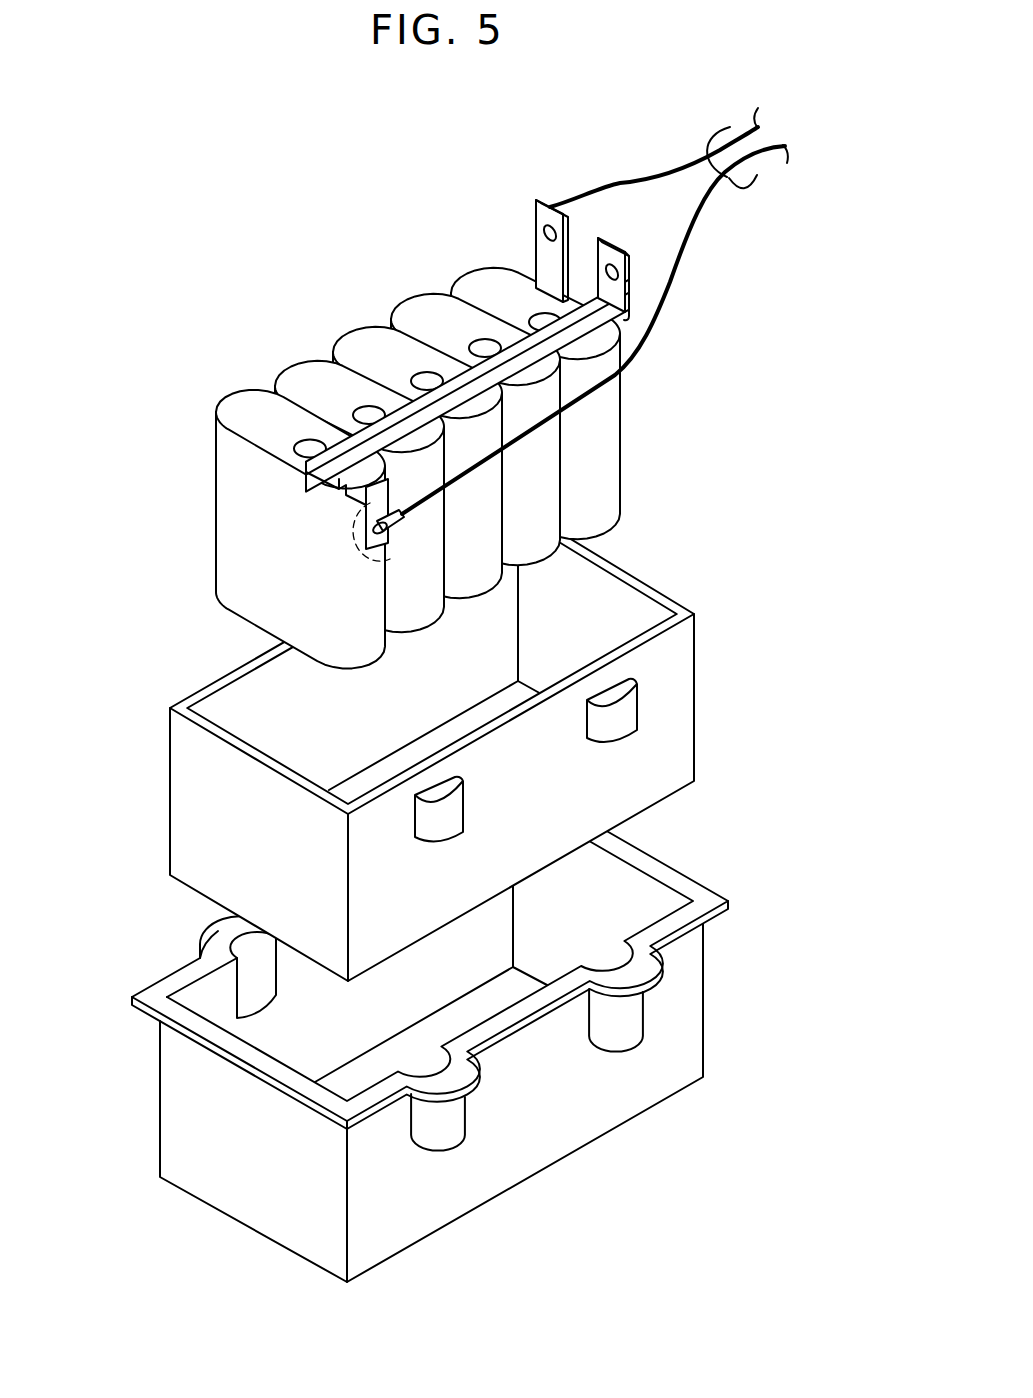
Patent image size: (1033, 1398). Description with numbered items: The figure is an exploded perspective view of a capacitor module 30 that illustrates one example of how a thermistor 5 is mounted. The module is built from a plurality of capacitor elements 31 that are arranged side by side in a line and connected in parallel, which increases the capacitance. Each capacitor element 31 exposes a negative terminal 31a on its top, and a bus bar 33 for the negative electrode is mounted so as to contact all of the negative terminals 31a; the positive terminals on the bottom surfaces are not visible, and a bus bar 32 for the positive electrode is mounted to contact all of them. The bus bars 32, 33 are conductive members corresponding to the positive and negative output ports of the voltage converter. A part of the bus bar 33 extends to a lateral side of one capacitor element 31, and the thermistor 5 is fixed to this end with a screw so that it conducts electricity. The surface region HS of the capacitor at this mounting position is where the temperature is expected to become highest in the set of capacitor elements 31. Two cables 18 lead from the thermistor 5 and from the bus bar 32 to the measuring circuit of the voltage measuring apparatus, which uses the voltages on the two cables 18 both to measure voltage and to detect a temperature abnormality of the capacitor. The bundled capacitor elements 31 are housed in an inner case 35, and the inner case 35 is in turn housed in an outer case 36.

The capacitor module 30 is at (436, 384).
The capacitor element 31 is at (487, 277).
The negative terminal 31a is at (292, 448).
The bus bar 32 is at (549, 204).
The bus bar 33 is at (616, 236).
The thermistor 5 is at (383, 548).
The surface region HS is at (350, 540).
The cable 18 is at (747, 192).
The inner case 35 is at (680, 708).
The outer case 36 is at (682, 1012).